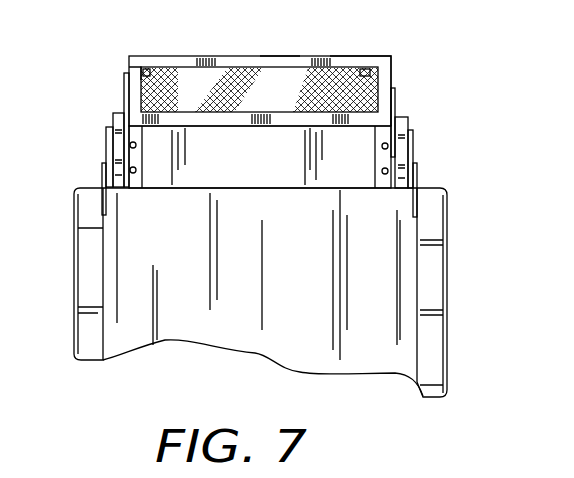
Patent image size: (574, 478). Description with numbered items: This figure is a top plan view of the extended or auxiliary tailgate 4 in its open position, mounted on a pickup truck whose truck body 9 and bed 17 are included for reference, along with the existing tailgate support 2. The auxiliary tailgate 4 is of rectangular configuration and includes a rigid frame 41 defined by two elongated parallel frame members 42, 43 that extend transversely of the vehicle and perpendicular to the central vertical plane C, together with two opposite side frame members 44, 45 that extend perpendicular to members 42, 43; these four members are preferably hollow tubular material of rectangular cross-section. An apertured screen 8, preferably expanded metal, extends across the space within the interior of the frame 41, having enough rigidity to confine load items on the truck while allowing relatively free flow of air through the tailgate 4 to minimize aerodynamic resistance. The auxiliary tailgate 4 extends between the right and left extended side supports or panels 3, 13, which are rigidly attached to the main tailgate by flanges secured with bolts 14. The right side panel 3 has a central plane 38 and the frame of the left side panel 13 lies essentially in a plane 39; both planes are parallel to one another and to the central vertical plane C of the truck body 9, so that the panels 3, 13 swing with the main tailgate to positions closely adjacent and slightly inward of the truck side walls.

The existing tailgate support 2 is at (103, 170).
The right extended side support or panel 3 is at (397, 117).
The extended or auxiliary tailgate 4 is at (281, 58).
The apertured screen 8 is at (292, 82).
The truck body 9 is at (444, 288).
The left extended side support or panel 13 is at (118, 112).
The bolts 14 is at (136, 145).
The bed 17 is at (200, 333).
The central plane of second auxiliary side panel 38 is at (397, 302).
The plane of side panel frame 39 is at (118, 248).
The rigid frame 41 is at (241, 57).
The elongated parallel frame member 42 is at (346, 57).
The elongated parallel frame member 43 is at (295, 127).
The side frame member 44 is at (129, 67).
The side frame member 45 is at (394, 78).
The central vertical plane C is at (262, 290).